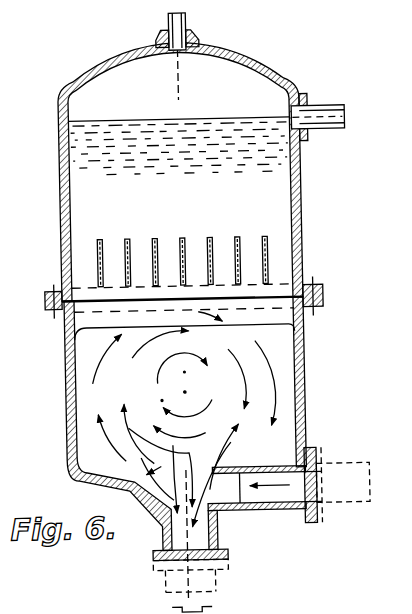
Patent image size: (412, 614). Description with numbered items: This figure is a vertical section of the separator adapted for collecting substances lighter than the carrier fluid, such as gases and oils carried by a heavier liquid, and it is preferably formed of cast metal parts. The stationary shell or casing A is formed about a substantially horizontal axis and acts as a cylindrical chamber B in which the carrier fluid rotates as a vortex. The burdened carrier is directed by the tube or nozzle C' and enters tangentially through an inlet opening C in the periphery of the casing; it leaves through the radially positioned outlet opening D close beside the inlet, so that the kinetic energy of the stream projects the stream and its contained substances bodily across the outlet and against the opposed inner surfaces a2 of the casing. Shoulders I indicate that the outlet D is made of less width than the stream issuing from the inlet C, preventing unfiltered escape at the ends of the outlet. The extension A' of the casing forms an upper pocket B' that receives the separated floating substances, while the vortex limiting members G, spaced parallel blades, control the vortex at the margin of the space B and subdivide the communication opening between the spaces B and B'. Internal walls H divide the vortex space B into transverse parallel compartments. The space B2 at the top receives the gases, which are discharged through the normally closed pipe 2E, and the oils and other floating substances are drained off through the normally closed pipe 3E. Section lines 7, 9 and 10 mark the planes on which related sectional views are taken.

The shell or casing A is at (192, 312).
The extension A' is at (203, 170).
The chamber or container B is at (184, 387).
The pocket B' is at (179, 164).
The space B2 is at (211, 76).
The vortex limiting members G is at (242, 260).
The internal walls H is at (276, 353).
The inlet opening C is at (185, 476).
The tube or nozzle C' is at (320, 496).
The outlet opening D is at (213, 531).
The shoulders I is at (252, 487).
The inner surfaces a2 is at (137, 483).
The normally closed pipe 2E is at (200, 27).
The normally closed pipe 3E is at (322, 114).
The section line 7— 7 is at (180, 9).
The section line 9— 9 is at (411, 114).
The section line 10— 10 is at (411, 254).